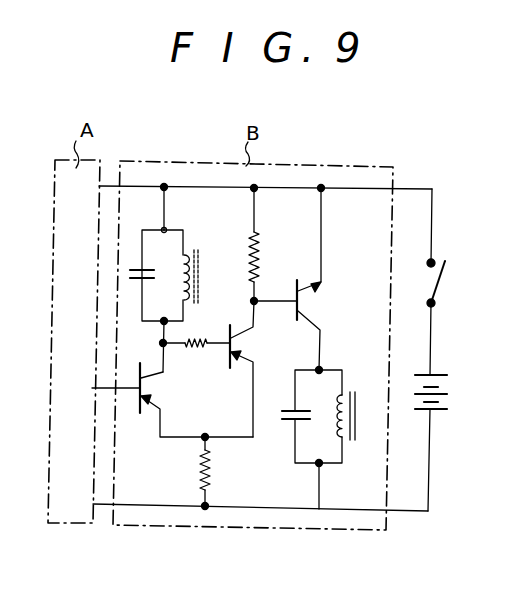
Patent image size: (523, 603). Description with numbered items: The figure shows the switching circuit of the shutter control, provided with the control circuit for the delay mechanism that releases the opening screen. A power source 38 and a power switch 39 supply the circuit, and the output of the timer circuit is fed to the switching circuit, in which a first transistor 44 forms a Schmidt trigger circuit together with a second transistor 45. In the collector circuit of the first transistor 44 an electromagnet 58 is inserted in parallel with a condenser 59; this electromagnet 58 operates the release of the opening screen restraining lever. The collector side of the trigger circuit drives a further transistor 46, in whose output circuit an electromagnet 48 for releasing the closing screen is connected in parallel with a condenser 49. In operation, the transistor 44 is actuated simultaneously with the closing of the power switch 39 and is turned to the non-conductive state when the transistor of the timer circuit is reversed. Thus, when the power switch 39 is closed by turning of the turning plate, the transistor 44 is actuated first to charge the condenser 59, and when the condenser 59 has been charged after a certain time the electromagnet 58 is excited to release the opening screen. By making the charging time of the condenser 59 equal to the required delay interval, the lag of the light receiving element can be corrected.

The power source 38 is at (448, 403).
The power switch 39 is at (445, 276).
The transistor 44 is at (145, 398).
The transistor 45 is at (233, 355).
The transistor 46 is at (296, 290).
The electromagnet 48 is at (355, 410).
The capacitor 49 is at (291, 425).
The electromagnet 58 is at (197, 273).
The condenser 59 is at (141, 270).